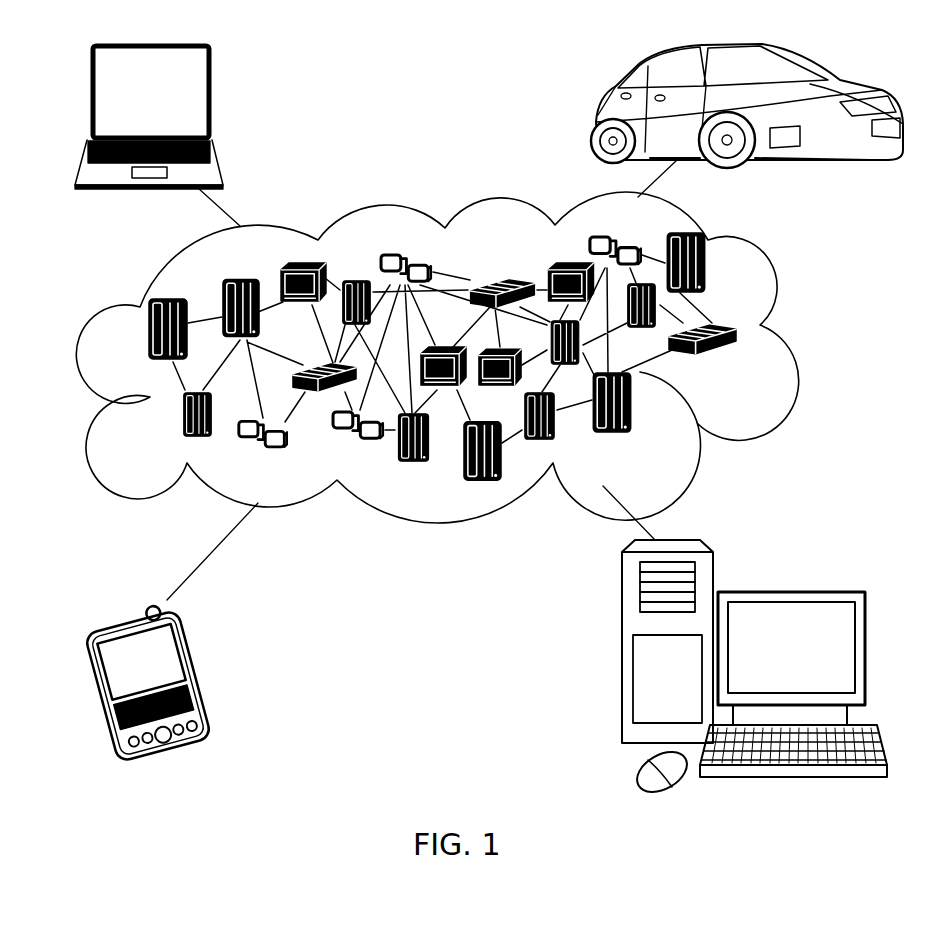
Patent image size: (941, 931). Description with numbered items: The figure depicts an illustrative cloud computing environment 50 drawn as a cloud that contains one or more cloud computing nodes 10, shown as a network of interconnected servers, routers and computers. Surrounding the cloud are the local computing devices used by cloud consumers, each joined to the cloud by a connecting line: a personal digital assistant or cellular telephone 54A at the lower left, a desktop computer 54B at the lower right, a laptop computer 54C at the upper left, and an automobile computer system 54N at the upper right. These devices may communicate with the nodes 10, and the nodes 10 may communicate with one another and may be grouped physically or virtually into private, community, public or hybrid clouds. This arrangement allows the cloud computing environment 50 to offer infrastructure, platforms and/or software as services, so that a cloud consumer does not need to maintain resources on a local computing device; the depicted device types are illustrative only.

The cloud computing nodes 10 is at (750, 371).
The cloud computing environment 50 is at (790, 338).
The personal digital assistant or cellular telephone 54A is at (204, 673).
The desktop computer 54B is at (788, 592).
The laptop computer 54C is at (212, 100).
The automobile computer system 54N is at (598, 112).